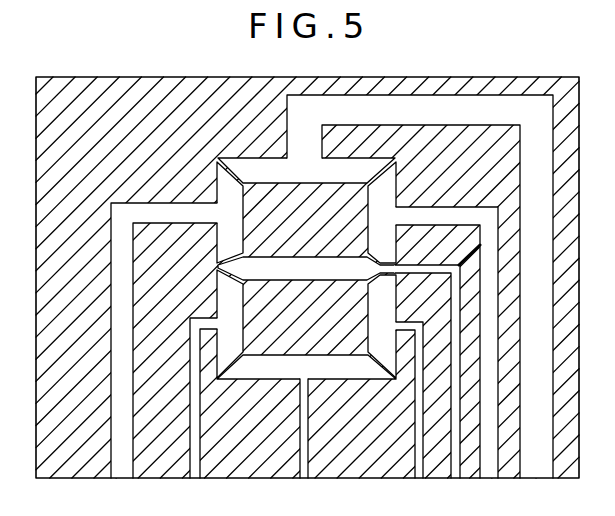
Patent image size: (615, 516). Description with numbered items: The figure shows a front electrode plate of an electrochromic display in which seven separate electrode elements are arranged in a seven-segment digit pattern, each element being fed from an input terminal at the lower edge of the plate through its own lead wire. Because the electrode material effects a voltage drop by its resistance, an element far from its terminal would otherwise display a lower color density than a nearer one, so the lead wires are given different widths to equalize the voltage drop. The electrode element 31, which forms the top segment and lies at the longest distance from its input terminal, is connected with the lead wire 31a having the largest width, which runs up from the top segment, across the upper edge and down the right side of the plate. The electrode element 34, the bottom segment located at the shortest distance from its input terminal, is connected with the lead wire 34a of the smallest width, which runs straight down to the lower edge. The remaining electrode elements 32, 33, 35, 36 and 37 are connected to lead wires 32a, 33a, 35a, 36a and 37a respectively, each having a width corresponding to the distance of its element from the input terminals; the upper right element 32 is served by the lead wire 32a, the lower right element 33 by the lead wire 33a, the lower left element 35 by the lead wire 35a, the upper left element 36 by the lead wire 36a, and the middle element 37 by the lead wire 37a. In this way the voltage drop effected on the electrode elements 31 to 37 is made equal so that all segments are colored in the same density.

The electrode element 31 is at (352, 167).
The lead wire 31a is at (468, 110).
The electrode element 32 is at (381, 188).
The lead wire 32a is at (448, 214).
The electrode element 33 is at (377, 305).
The lead wire 33a is at (404, 327).
The electrode element 34 is at (268, 368).
The lead wire 34a is at (307, 436).
The electrode element 35 is at (235, 318).
The lead wire 35a is at (203, 322).
The electrode element 36 is at (232, 216).
The lead wire 36a is at (160, 211).
The electrode element 37 is at (328, 266).
The lead wire 37a is at (428, 270).